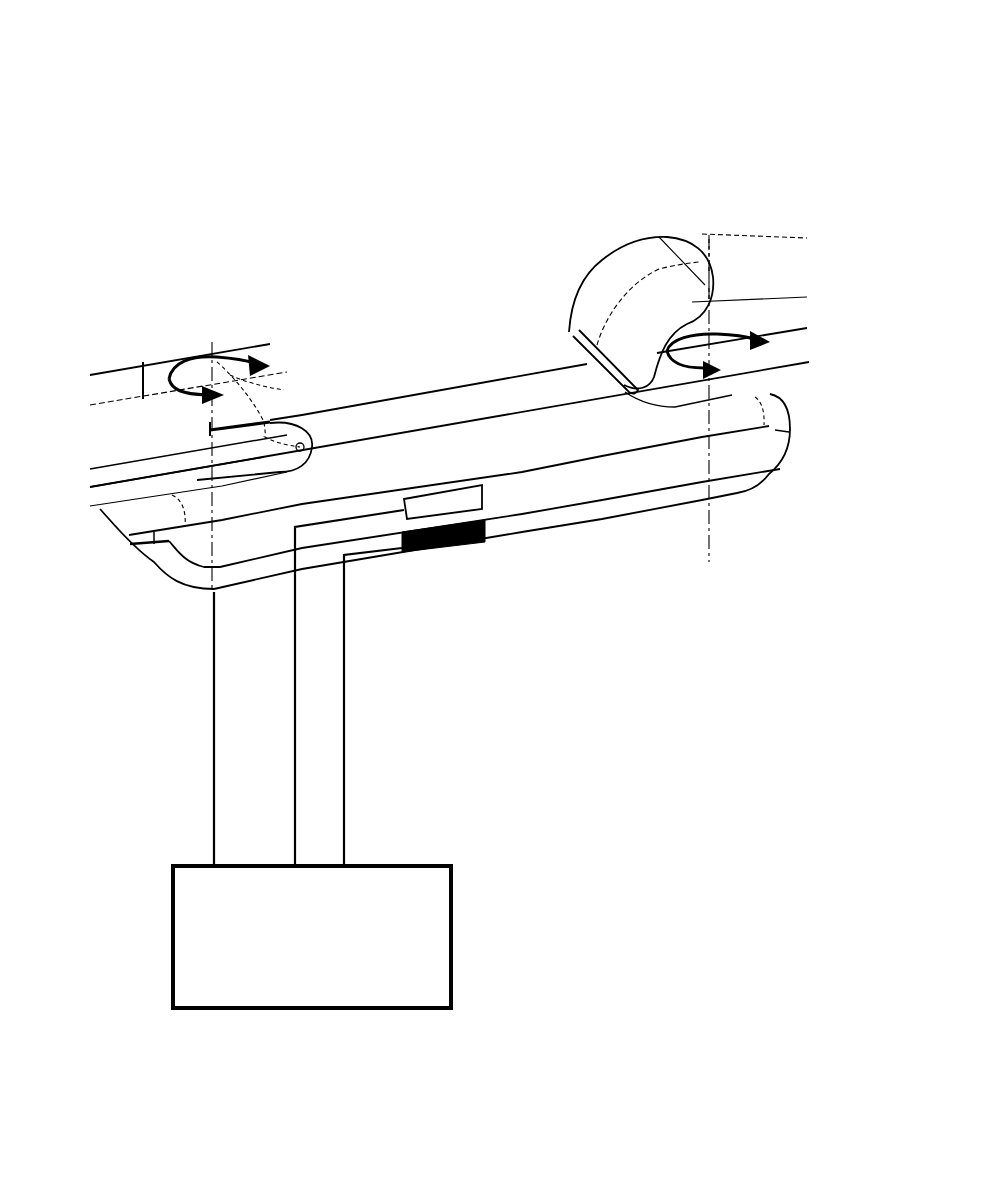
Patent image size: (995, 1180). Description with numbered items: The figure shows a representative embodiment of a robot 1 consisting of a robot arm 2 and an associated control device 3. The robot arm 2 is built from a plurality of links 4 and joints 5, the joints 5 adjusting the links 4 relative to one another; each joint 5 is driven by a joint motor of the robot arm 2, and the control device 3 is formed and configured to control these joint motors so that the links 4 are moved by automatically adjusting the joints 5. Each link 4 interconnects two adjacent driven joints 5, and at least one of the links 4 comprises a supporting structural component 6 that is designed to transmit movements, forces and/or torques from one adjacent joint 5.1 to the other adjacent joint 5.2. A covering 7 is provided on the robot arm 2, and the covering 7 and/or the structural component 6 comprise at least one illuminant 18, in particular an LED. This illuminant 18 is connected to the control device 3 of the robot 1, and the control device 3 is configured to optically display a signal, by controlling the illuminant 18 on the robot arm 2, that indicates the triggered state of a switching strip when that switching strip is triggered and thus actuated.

The robot 1 is at (134, 140).
The robot arm 2 is at (694, 553).
The control device 3 is at (427, 932).
The link 4 is at (455, 402).
The supporting structural component 6 is at (115, 600).
The joint 5 is at (464, 350).
The adjacent joint 5.1 is at (268, 421).
The other adjacent joint 5.2 is at (690, 260).
The covering 7 is at (142, 360).
The illuminant 18 is at (475, 498).